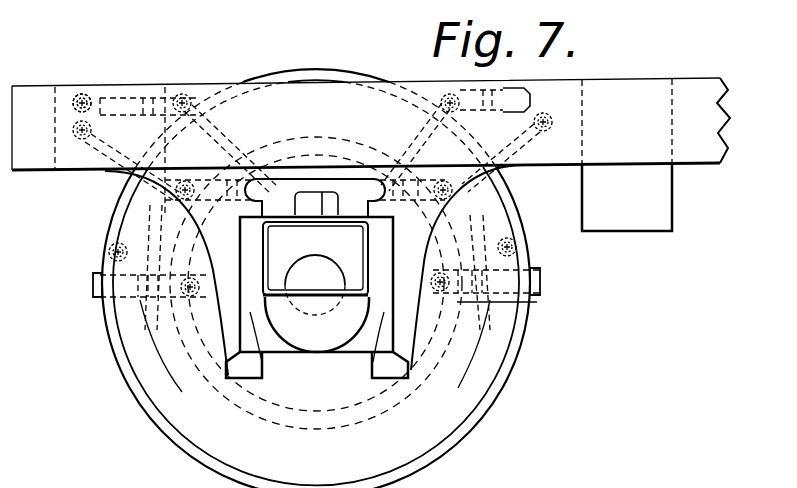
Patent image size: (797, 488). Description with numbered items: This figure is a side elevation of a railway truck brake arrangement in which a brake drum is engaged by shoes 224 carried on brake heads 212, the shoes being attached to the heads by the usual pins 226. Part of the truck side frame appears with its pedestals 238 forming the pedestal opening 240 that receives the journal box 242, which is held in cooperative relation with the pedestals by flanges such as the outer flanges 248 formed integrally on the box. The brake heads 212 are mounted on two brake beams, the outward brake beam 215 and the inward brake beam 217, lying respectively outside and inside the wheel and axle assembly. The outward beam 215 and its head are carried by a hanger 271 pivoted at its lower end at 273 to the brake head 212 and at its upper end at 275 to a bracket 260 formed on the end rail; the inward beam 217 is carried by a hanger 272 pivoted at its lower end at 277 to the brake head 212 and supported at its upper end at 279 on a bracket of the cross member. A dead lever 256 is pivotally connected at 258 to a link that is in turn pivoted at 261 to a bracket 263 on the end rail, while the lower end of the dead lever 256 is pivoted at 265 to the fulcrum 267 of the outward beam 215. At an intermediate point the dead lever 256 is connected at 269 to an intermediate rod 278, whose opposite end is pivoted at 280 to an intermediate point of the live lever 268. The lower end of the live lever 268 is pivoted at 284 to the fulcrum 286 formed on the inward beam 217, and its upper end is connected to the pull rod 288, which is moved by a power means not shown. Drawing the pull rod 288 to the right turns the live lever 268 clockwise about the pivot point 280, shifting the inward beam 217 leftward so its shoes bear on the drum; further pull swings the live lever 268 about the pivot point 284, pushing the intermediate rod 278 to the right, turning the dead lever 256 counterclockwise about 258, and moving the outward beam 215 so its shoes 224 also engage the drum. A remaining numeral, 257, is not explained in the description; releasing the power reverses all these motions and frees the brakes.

The brake head 212 is at (110, 337).
The brake beam 215 is at (98, 288).
The brake beam 217 is at (541, 277).
The shoes 224 is at (188, 370).
The pins 226 is at (162, 204).
The pedestals 238 is at (233, 385).
The pedestal opening 240 is at (279, 237).
The journal box 242 is at (262, 170).
The outer flanges 248 is at (367, 355).
The dead lever 256 is at (196, 130).
The upper bracket 257 is at (118, 107).
The pivot connection 258 is at (190, 96).
The bracket 260 is at (66, 108).
The pivot connection 261 is at (88, 100).
The bracket 263 is at (78, 92).
The pivot connection 265 is at (143, 392).
The fulcrum 267 is at (142, 363).
The live lever 268 is at (437, 133).
The pivot connection 269 is at (201, 170).
The hanger 271 is at (100, 193).
The hanger 272 is at (525, 212).
The pivot connection 273 is at (108, 252).
The pivot connection 275 is at (95, 133).
The pivot connection 277 is at (516, 249).
The intermediate rod 278 is at (365, 175).
The pivot support 279 is at (548, 122).
The pivot point 280 is at (447, 181).
The pivot point 284 is at (465, 335).
The fulcrum 286 is at (440, 92).
The pull rod 288 is at (537, 80).